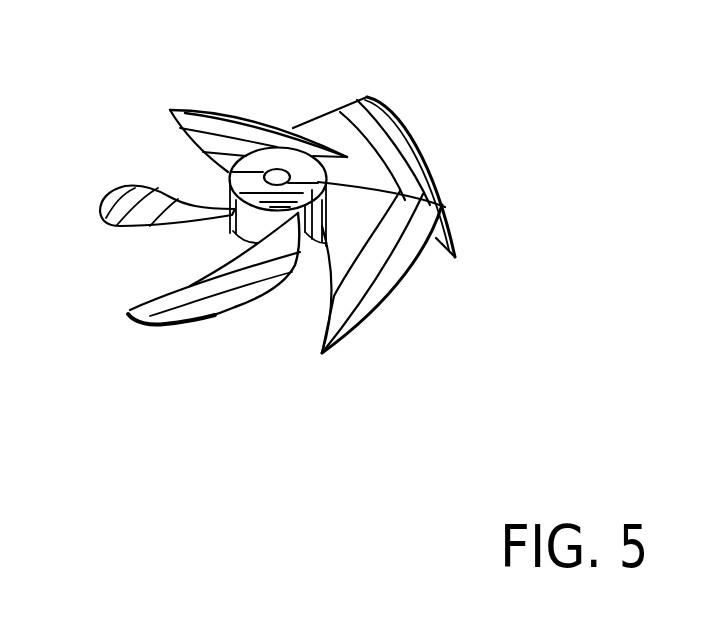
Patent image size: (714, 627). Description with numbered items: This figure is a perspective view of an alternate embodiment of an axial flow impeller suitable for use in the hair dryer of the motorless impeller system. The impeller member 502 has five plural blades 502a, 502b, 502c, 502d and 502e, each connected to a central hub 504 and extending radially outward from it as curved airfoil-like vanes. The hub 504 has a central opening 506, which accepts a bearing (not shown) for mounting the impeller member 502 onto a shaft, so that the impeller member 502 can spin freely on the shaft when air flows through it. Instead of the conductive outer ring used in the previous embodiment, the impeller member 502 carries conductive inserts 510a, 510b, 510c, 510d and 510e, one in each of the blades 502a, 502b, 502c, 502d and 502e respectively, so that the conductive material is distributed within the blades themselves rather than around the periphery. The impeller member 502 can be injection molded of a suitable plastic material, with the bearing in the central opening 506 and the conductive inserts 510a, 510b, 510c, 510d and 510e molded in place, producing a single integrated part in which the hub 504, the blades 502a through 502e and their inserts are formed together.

The impeller member 502 is at (367, 75).
The blade 502a is at (205, 110).
The blade 502b is at (410, 143).
The blade 502c is at (390, 283).
The blade 502d is at (180, 320).
The blade 502e is at (100, 214).
The central hub 504 is at (289, 155).
The central opening 506 is at (265, 174).
The conductive insert 510a is at (195, 136).
The conductive insert 510b is at (410, 177).
The conductive insert 510c is at (353, 297).
The conductive insert 510d is at (246, 283).
The conductive insert 510e is at (137, 223).